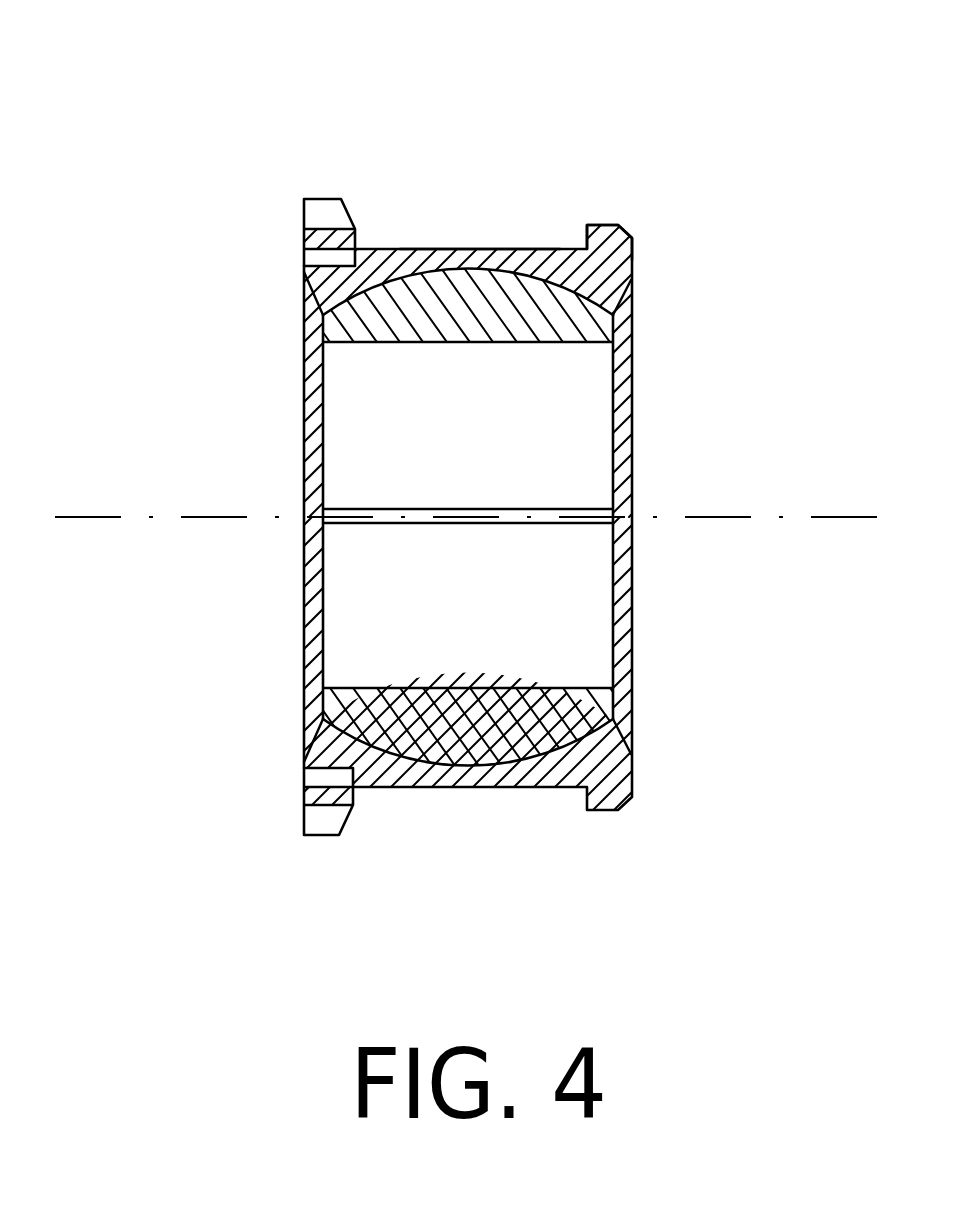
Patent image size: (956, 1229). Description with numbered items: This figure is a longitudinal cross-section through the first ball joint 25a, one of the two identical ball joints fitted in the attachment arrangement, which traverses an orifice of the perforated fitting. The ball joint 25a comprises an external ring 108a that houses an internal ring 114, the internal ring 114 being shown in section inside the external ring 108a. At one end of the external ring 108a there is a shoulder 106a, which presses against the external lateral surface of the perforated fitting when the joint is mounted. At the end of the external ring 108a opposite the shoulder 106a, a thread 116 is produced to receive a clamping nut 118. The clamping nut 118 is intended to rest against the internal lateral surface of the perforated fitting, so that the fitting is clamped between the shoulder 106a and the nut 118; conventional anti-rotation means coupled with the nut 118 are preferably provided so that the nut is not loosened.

The first ball joint 25a is at (390, 125).
The clamping nut 118 is at (308, 238).
The thread 116 is at (320, 260).
The internal ring 114 is at (387, 320).
The external ring 108a is at (567, 250).
The shoulder 106a is at (618, 230).